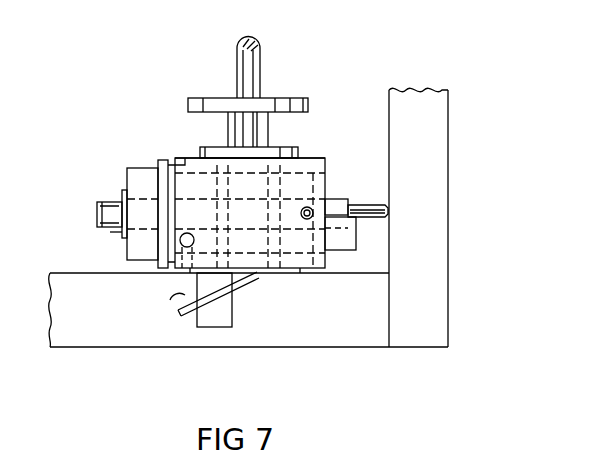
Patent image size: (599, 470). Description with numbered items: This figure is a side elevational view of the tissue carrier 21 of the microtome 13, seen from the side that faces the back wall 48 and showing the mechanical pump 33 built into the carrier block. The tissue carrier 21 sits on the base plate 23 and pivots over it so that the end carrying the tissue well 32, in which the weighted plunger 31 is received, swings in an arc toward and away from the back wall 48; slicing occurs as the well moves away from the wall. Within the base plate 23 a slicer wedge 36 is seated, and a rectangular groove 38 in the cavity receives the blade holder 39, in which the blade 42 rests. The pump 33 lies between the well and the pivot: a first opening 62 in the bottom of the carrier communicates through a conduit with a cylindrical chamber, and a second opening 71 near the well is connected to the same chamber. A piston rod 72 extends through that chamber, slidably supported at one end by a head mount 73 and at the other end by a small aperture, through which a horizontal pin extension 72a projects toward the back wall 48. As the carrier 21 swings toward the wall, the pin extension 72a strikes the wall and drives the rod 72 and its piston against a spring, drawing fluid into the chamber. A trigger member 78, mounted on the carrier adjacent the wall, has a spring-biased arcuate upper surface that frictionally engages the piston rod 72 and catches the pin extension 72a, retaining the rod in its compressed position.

The microtome 13 is at (180, 98).
The tissue carrier 21 is at (192, 160).
The base plate 23 is at (80, 342).
The weighted plunger 31 is at (258, 62).
The tissue well 32 is at (270, 178).
The mechanical pump 33 is at (95, 212).
The slicer wedge 36 is at (185, 270).
The rectangular groove 38 is at (217, 327).
The blade holder 39 is at (226, 311).
The blade 42 is at (176, 278).
The back wall 48 is at (421, 92).
The first opening 62 is at (192, 274).
The second opening 71 is at (303, 268).
The piston rod 72 is at (341, 198).
The pin extension 72a is at (370, 205).
The head mount 73 is at (135, 178).
The trigger member 78 is at (345, 252).